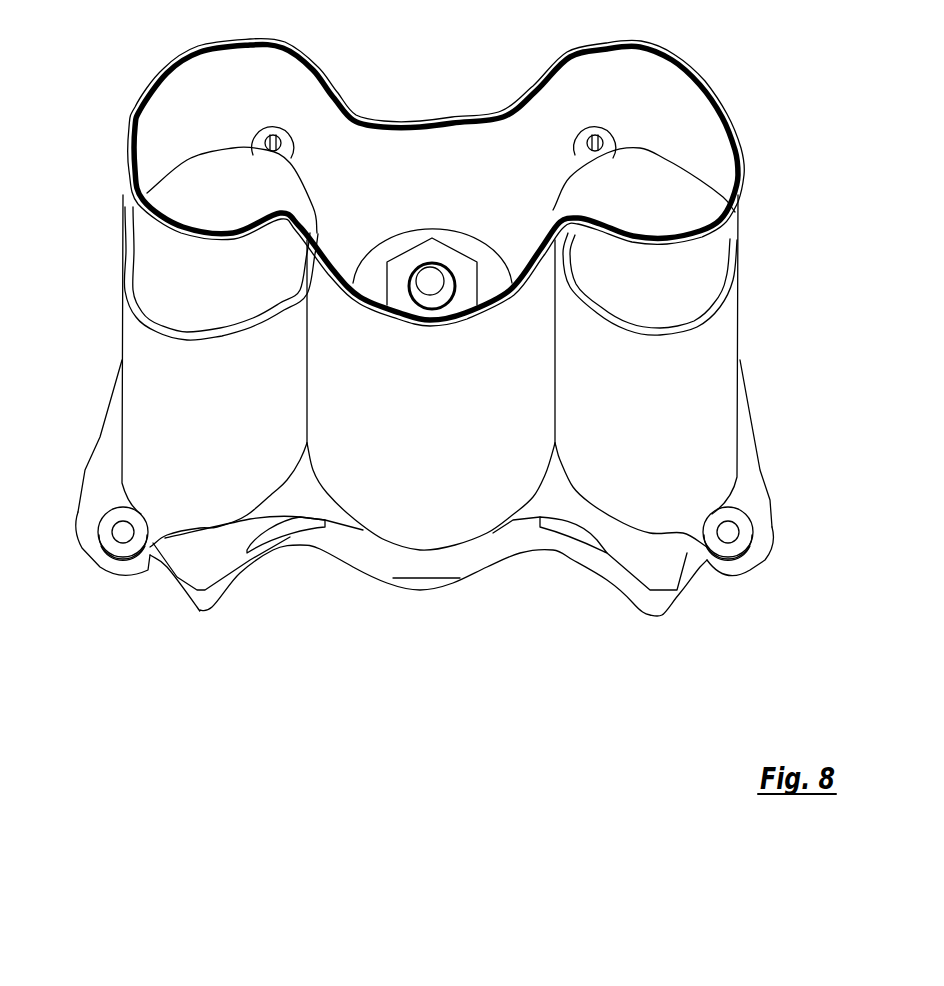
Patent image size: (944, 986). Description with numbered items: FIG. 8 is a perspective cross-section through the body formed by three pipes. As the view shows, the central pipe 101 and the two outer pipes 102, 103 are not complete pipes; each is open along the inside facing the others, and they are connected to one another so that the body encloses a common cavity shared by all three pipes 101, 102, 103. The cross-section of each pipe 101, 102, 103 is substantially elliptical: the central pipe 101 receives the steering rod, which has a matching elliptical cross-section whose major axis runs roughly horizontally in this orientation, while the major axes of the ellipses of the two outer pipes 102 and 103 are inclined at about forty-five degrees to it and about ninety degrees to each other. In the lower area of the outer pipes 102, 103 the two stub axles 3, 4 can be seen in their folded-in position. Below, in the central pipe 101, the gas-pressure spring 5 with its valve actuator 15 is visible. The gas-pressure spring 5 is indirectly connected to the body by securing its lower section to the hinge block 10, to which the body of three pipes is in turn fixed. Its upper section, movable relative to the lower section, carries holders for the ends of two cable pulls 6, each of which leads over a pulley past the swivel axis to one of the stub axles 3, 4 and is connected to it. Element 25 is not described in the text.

The stub axle 3 is at (713, 383).
The stub axle 4 is at (150, 368).
The gas-pressure spring 5 is at (452, 233).
The cable pulls 6 is at (123, 532).
The hinge block 10 is at (480, 560).
The valve actuator 15 is at (432, 280).
The lug 25 is at (619, 133).
The central pipe section 101 is at (456, 459).
The outer pipe 102 is at (730, 218).
The outer pipe 103 is at (130, 222).